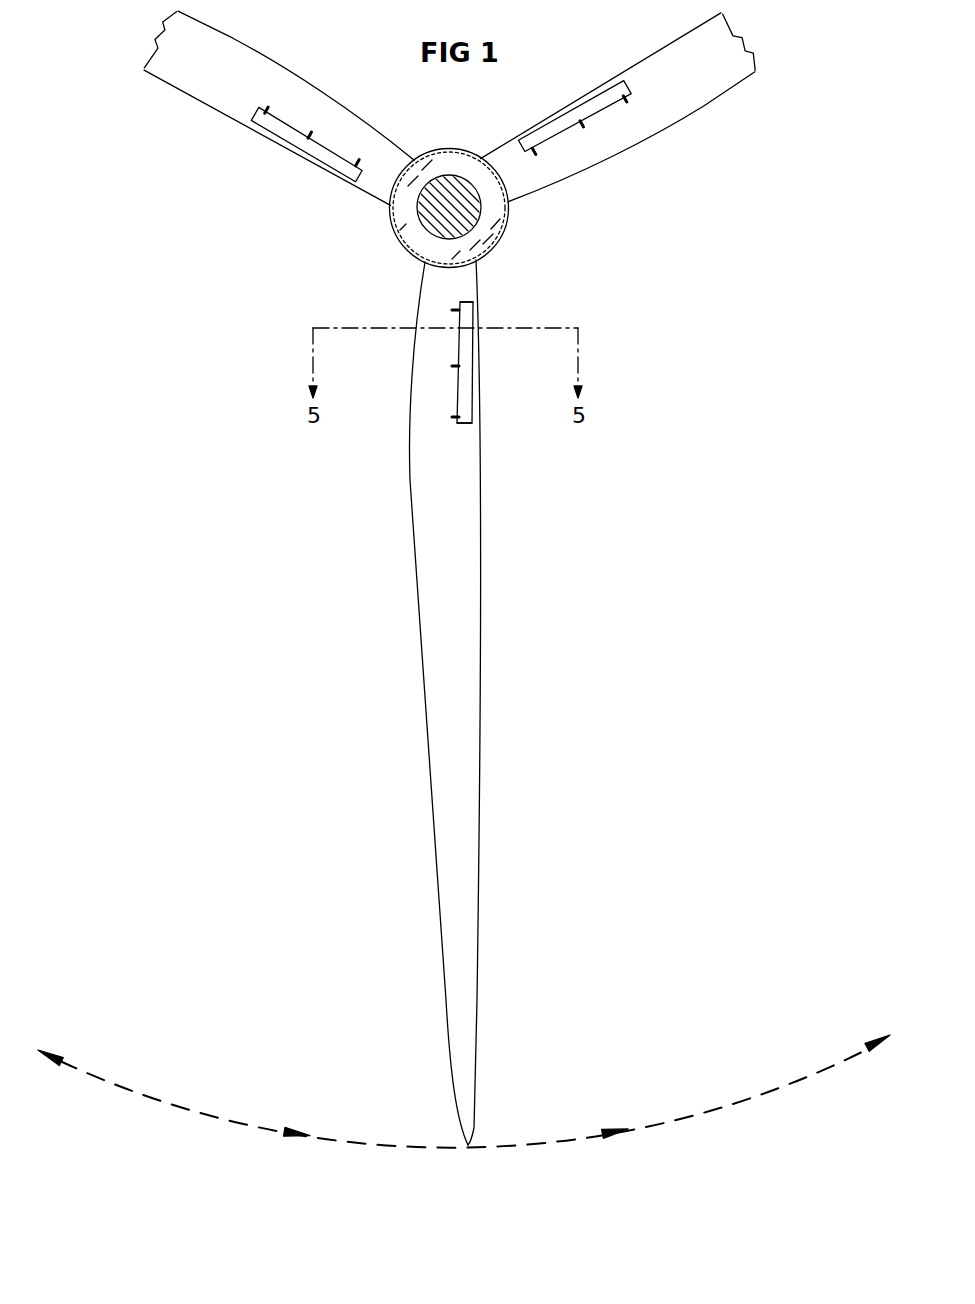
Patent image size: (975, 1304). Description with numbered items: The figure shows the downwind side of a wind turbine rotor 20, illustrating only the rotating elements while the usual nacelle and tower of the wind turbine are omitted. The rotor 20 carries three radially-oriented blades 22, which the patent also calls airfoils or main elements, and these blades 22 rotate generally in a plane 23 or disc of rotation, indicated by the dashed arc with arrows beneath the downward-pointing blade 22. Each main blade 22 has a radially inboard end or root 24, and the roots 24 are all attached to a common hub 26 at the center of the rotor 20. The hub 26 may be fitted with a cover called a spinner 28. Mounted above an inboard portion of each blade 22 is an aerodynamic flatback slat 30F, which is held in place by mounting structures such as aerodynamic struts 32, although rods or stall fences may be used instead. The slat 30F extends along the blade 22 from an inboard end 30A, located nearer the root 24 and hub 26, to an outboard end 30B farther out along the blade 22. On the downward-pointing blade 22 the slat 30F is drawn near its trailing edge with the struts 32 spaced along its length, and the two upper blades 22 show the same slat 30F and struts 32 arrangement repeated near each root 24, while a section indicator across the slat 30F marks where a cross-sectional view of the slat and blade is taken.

The wind turbine rotor 20 is at (308, 296).
The blade 22 is at (241, 85).
The plane of rotation 23 is at (357, 1142).
The root 24 is at (403, 155).
The hub 26 is at (393, 236).
The spinner 28 is at (508, 223).
The inboard end of the slat 30A is at (473, 303).
The aerodynamic flatback slat 30F is at (474, 376).
The outboard end of the slat 30B is at (463, 423).
The aerodynamic strut 32 is at (452, 310).